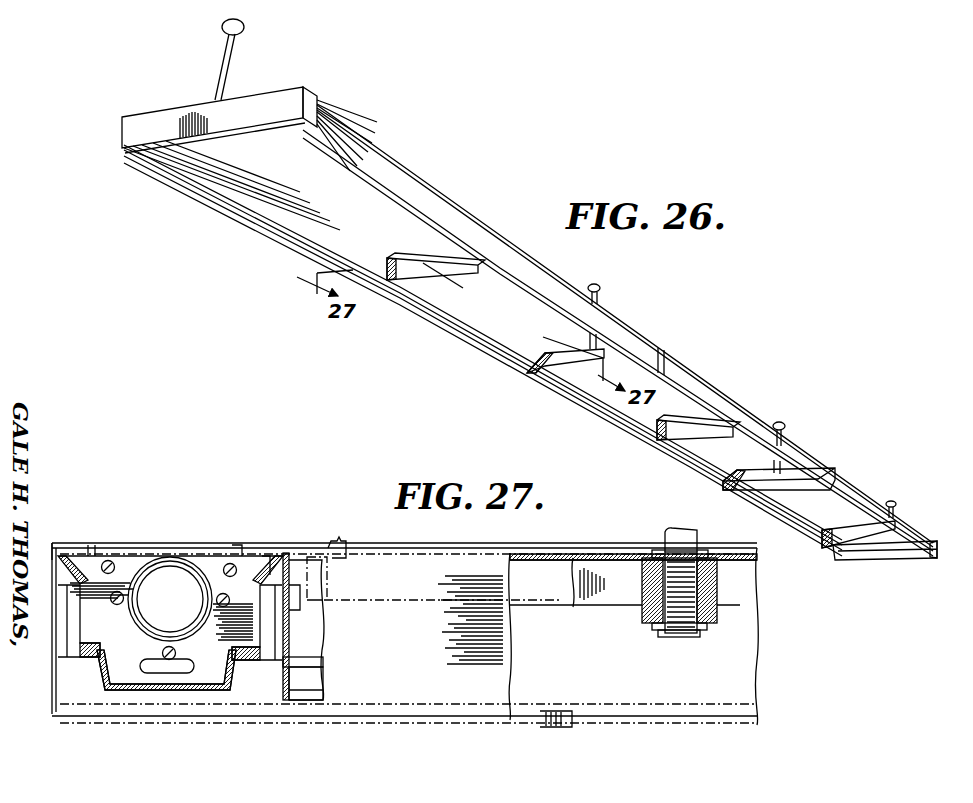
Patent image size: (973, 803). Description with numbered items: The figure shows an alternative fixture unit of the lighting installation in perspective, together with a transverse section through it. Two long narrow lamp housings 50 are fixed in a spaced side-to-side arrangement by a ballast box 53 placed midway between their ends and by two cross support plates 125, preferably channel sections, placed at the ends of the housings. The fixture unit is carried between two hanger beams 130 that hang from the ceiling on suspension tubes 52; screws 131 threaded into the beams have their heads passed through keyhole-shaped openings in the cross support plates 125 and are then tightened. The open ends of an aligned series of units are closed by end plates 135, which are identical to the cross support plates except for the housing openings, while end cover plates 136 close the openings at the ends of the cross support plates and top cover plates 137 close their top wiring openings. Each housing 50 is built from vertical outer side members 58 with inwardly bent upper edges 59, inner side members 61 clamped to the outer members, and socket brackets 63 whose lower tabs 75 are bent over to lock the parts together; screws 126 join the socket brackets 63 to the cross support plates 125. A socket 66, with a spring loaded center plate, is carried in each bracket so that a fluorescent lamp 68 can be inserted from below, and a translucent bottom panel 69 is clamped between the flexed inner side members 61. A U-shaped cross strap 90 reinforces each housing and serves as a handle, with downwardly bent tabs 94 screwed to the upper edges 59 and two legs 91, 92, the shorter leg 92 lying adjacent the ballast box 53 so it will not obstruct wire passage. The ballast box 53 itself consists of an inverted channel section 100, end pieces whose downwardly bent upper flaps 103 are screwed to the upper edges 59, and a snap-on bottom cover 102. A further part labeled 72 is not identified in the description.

In FIG. 26, the lamp housing 50 is at (290, 228).
In FIG. 27, the lamp housing 50 is at (50, 694).
In FIG. 26, the suspension tube 52 is at (232, 64).
In FIG. 27, the suspension tube 52 is at (697, 538).
In FIG. 26, the ballast box 53 is at (437, 256).
In FIG. 27, the ballast box 53 is at (455, 545).
In FIG. 26, the cross support plate 125 is at (252, 134).
In FIG. 27, the cross support plate 125 is at (470, 557).
In FIG. 26, the end plate 135 is at (168, 117).
In FIG. 26, the end cover plate 136 is at (310, 99).
In FIG. 27, the end cover plate 136 is at (55, 541).
In FIG. 27, the top cover plate 137 is at (100, 542).
In FIG. 27, the screw 126 is at (110, 562).
In FIG. 27, the socket bracket 63 is at (135, 556).
In FIG. 27, the fluorescent lamp 68 is at (160, 562).
In FIG. 27, the socket 66 is at (190, 560).
In FIG. 27, the cross strap 90 is at (237, 551).
In FIG. 27, the tab 94 is at (267, 556).
In FIG. 27, the upper flap 103 is at (284, 560).
In FIG. 27, the upper edge 59 is at (285, 600).
In FIG. 27, the screw 131 is at (341, 541).
In FIG. 27, the hanger beam 130 is at (555, 562).
In FIG. 27, the leg 92 is at (290, 599).
In FIG. 27, the outer side member 58 is at (284, 620).
In FIG. 27, the inverted channel section 100 is at (314, 645).
In FIG. 27, the channel flange 72 is at (60, 643).
In FIG. 27, the bottom cover 102 is at (313, 683).
In FIG. 27, the lower tab 75 is at (330, 700).
In FIG. 27, the leg 91 is at (62, 618).
In FIG. 27, the inner side member 61 is at (258, 620).
In FIG. 27, the bottom panel 69 is at (204, 686).